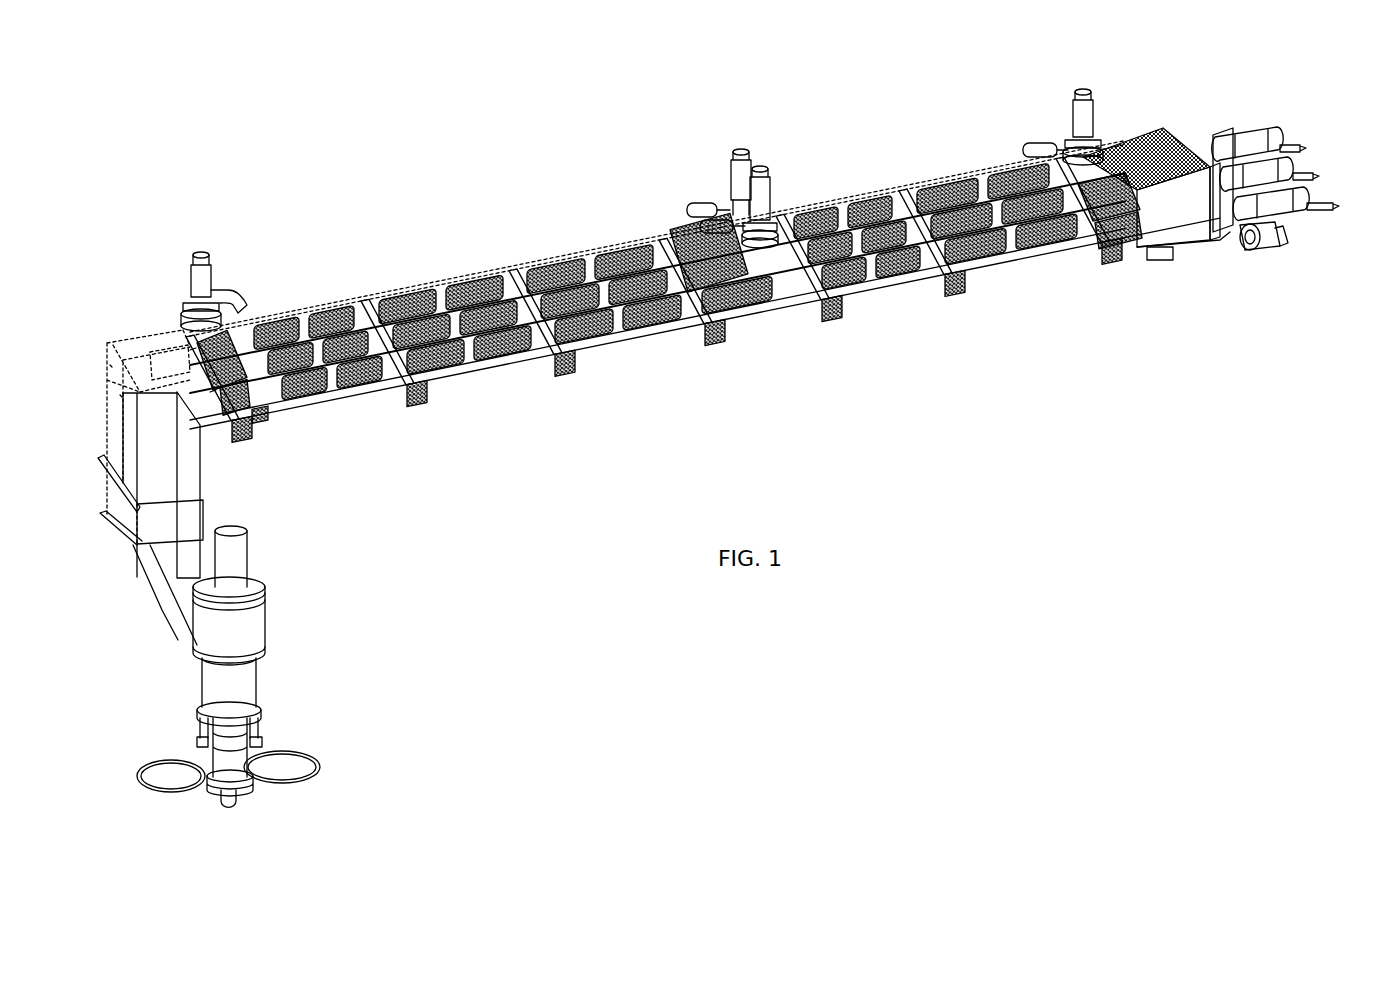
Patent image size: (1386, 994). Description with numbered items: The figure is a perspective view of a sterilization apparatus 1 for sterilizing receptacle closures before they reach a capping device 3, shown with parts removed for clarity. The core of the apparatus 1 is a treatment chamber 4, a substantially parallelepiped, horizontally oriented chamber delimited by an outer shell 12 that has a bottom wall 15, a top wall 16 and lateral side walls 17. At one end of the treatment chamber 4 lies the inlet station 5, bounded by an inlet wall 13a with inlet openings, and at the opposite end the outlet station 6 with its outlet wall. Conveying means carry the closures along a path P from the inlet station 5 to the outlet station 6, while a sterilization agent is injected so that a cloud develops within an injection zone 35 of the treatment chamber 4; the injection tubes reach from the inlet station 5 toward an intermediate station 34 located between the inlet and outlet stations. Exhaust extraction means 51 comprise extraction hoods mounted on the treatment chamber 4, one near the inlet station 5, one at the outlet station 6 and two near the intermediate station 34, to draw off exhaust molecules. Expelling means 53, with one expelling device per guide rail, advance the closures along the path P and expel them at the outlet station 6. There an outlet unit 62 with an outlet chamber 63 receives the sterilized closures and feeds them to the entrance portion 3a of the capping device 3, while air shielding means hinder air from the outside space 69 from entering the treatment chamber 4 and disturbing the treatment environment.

The sterilization apparatus 1 is at (1060, 348).
The capping device 3 is at (194, 682).
The entrance portion 3a is at (140, 556).
The treatment chamber 4 is at (936, 160).
The inlet station 5 is at (1177, 165).
The outlet station 6 is at (188, 355).
The outer shell 12 is at (603, 248).
The inlet wall 13a is at (1232, 244).
The bottom wall 15 is at (868, 295).
The top wall 16 is at (843, 222).
The lateral side walls 17 is at (983, 281).
The intermediate station 34 is at (828, 266).
The injection zone 35 is at (919, 252).
The exhaust extraction means 51 is at (164, 252).
The expelling means 53 is at (1293, 133).
The outlet unit 62 is at (104, 341).
The outlet chamber 63 is at (117, 431).
The outside space 69 is at (153, 528).
The path P is at (483, 303).